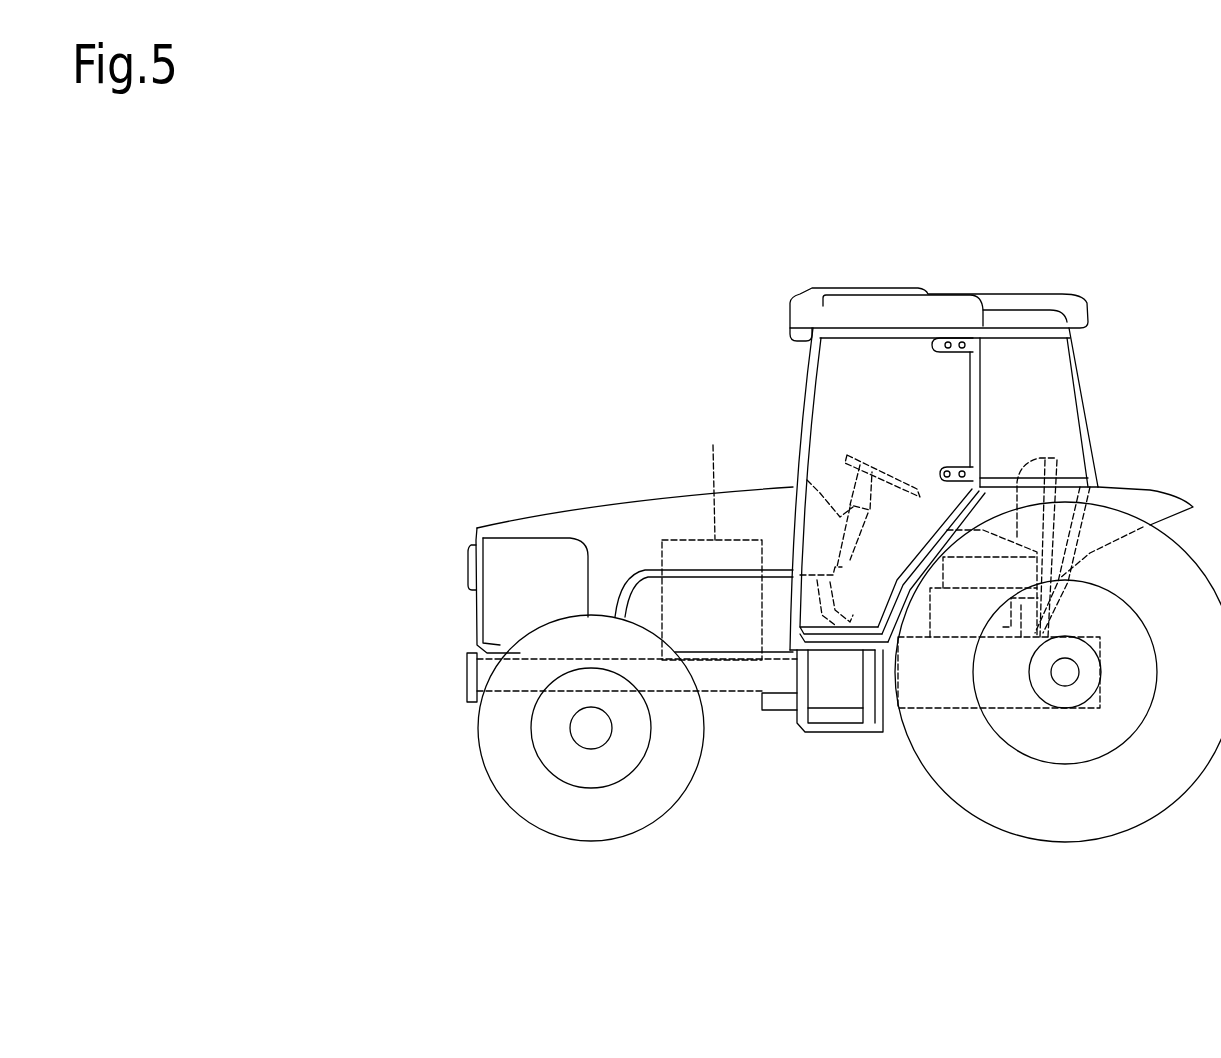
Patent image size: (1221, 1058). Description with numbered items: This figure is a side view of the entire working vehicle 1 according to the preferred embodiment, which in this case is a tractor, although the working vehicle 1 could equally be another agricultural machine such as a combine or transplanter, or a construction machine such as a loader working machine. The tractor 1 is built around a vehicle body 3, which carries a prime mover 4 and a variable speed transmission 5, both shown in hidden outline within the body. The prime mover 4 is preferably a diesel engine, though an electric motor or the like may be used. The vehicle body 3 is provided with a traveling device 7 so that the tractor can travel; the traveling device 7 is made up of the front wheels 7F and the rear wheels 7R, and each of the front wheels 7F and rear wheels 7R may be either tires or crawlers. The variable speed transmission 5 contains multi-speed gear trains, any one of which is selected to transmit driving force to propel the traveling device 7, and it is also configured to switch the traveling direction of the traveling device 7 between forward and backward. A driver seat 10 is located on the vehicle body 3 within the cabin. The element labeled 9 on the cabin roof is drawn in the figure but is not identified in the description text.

The working vehicle 1 is at (1101, 306).
The vehicle body 3 is at (730, 698).
The prime mover 4 is at (712, 535).
The variable speed transmission 5 is at (883, 685).
The traveling device 7 is at (957, 895).
The front wheels 7F is at (637, 807).
The rear wheels 7R is at (977, 800).
The cabin roof 9 is at (855, 338).
The driver seat 10 is at (1058, 455).